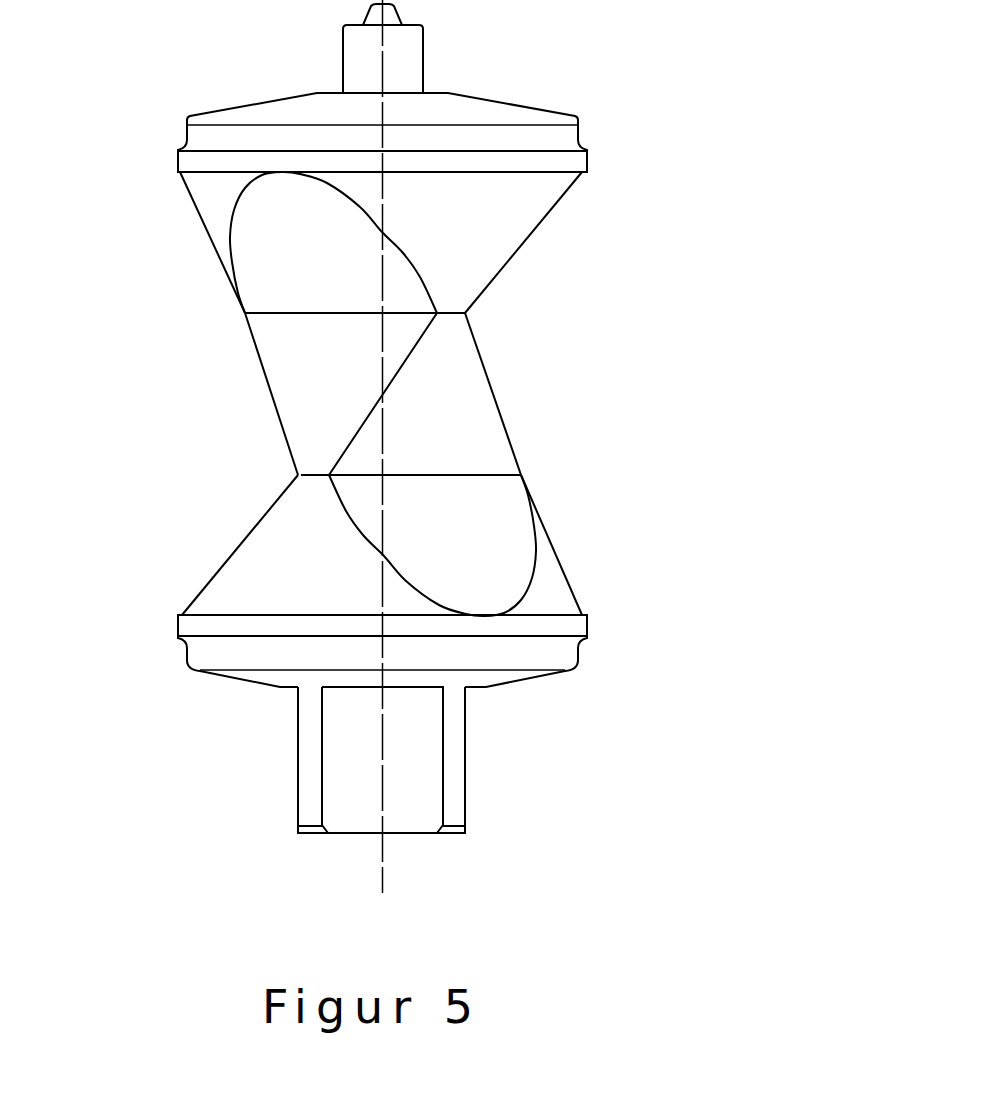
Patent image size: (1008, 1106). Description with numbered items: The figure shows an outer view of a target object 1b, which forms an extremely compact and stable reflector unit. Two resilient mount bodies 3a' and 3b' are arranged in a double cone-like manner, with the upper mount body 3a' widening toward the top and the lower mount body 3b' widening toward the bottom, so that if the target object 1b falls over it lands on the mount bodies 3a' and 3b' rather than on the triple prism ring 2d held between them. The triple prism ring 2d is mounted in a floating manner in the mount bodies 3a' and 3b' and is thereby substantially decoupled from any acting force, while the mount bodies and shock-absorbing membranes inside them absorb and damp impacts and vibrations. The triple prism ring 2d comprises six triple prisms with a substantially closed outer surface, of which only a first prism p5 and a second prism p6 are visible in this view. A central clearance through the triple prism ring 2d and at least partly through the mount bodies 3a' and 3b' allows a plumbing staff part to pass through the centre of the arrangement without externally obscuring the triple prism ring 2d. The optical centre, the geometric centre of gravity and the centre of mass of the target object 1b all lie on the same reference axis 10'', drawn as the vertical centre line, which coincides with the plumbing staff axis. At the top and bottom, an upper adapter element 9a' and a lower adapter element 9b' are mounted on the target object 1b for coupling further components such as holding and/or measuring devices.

The target object 1b is at (694, 70).
The upper adapter element 9a' is at (294, 46).
The mount body 3a' is at (456, 203).
The triple prism ring 2d is at (440, 394).
The first prism p5 is at (288, 382).
The second prism p6 is at (492, 442).
The mount body 3b' is at (303, 581).
The reference axis 10'' is at (517, 446).
The lower adapter element 9b' is at (276, 760).